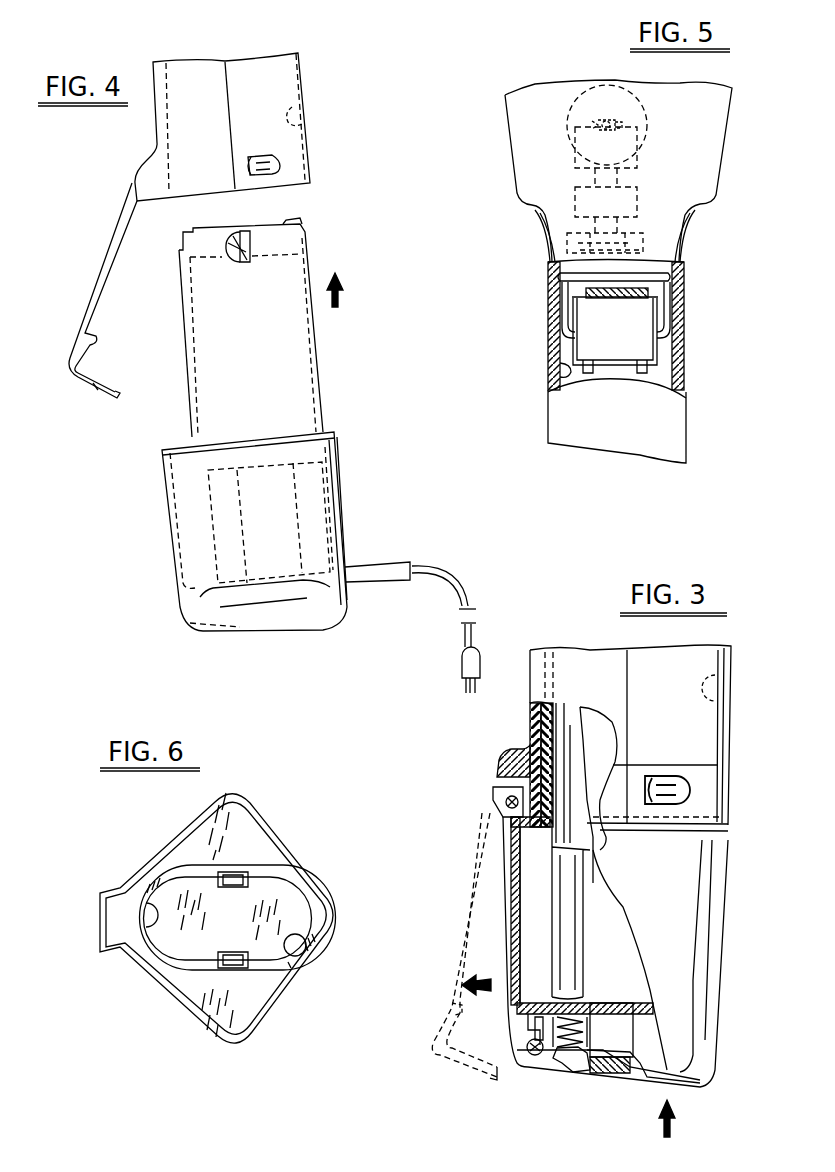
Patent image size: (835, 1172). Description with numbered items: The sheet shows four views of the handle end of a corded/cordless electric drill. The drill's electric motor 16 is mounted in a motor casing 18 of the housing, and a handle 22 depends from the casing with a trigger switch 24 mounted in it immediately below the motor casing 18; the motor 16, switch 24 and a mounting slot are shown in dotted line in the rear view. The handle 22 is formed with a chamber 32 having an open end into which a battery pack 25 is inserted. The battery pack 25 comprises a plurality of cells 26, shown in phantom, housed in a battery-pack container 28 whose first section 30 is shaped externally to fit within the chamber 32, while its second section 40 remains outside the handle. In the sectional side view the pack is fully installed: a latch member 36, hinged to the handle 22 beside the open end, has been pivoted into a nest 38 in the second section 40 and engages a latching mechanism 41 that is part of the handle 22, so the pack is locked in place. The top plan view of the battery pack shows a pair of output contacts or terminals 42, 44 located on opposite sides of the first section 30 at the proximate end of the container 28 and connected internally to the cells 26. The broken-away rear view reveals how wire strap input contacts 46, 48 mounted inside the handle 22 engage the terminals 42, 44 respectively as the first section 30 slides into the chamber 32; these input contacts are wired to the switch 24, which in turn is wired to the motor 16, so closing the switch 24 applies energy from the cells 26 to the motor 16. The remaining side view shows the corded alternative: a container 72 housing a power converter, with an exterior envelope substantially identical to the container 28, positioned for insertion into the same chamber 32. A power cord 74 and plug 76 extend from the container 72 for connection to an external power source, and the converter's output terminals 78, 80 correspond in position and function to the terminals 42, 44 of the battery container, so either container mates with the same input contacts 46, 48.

In FIG. 5, the electric motor 16 is at (575, 96).
In FIG. 5, the motor casing 18 is at (712, 122).
In FIG. 4, the handle 22 is at (302, 74).
In FIG. 5, the handle 22 is at (663, 423).
In FIG. 3, the handle 22 is at (530, 717).
In FIG. 5, the trigger switch 24 is at (627, 198).
In FIG. 6, the battery pack 25 is at (92, 893).
In FIG. 3, the cells 26 is at (570, 742).
In FIG. 5, the battery-pack container 28 is at (686, 384).
In FIG. 3, the battery-pack container 28 is at (728, 882).
In FIG. 6, the battery-pack container 28 is at (130, 977).
In FIG. 5, the first section 30 is at (593, 392).
In FIG. 3, the first section 30 is at (597, 753).
In FIG. 6, the first section 30 is at (157, 858).
In FIG. 4, the chamber 32 is at (312, 123).
In FIG. 5, the chamber 32 is at (565, 370).
In FIG. 3, the chamber 32 is at (730, 673).
In FIG. 4, the latch member 36 is at (105, 273).
In FIG. 3, the latch member 36 is at (460, 922).
In FIG. 3, the nest 38 is at (505, 833).
In FIG. 3, the second section 40 is at (705, 980).
In FIG. 6, the second section 40 is at (178, 1000).
In FIG. 3, the latching mechanism 41 is at (602, 1064).
In FIG. 5, the output contact 42 is at (560, 342).
In FIG. 6, the output contact 42 is at (237, 968).
In FIG. 5, the output contact 44 is at (683, 347).
In FIG. 6, the output contact 44 is at (240, 873).
In FIG. 5, the wire strap contact 46 is at (560, 297).
In FIG. 5, the wire strap contact 48 is at (682, 300).
In FIG. 4, the container 72 is at (325, 400).
In FIG. 4, the power cord 74 is at (451, 572).
In FIG. 4, the plug 76 is at (477, 658).
In FIG. 4, the output terminal 78 is at (248, 230).
In FIG. 4, the output terminal 80 is at (226, 234).